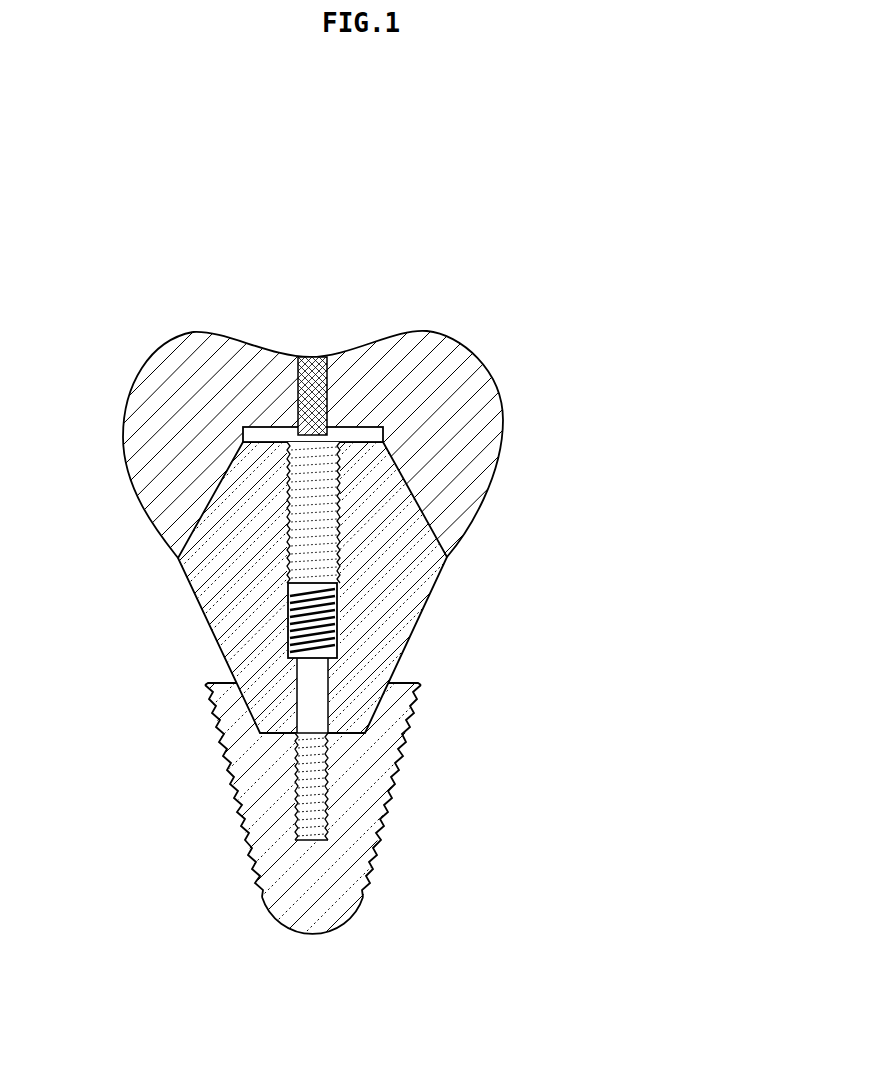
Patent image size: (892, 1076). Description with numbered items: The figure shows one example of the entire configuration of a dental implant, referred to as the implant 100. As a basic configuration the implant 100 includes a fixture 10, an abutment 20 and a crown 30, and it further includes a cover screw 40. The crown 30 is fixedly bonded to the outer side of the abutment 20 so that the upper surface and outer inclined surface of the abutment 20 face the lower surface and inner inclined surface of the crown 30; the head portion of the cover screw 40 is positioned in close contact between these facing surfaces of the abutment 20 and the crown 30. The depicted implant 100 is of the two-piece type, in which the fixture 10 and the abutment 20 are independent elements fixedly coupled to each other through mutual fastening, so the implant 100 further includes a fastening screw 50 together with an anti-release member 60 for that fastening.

The implant 100 is at (457, 245).
The fixture 10 is at (232, 785).
The abutment 20 is at (440, 585).
The crown 30 is at (508, 400).
The cover screw 40 is at (268, 423).
The fastening screw 50 is at (328, 745).
The anti-release member 60 is at (283, 607).